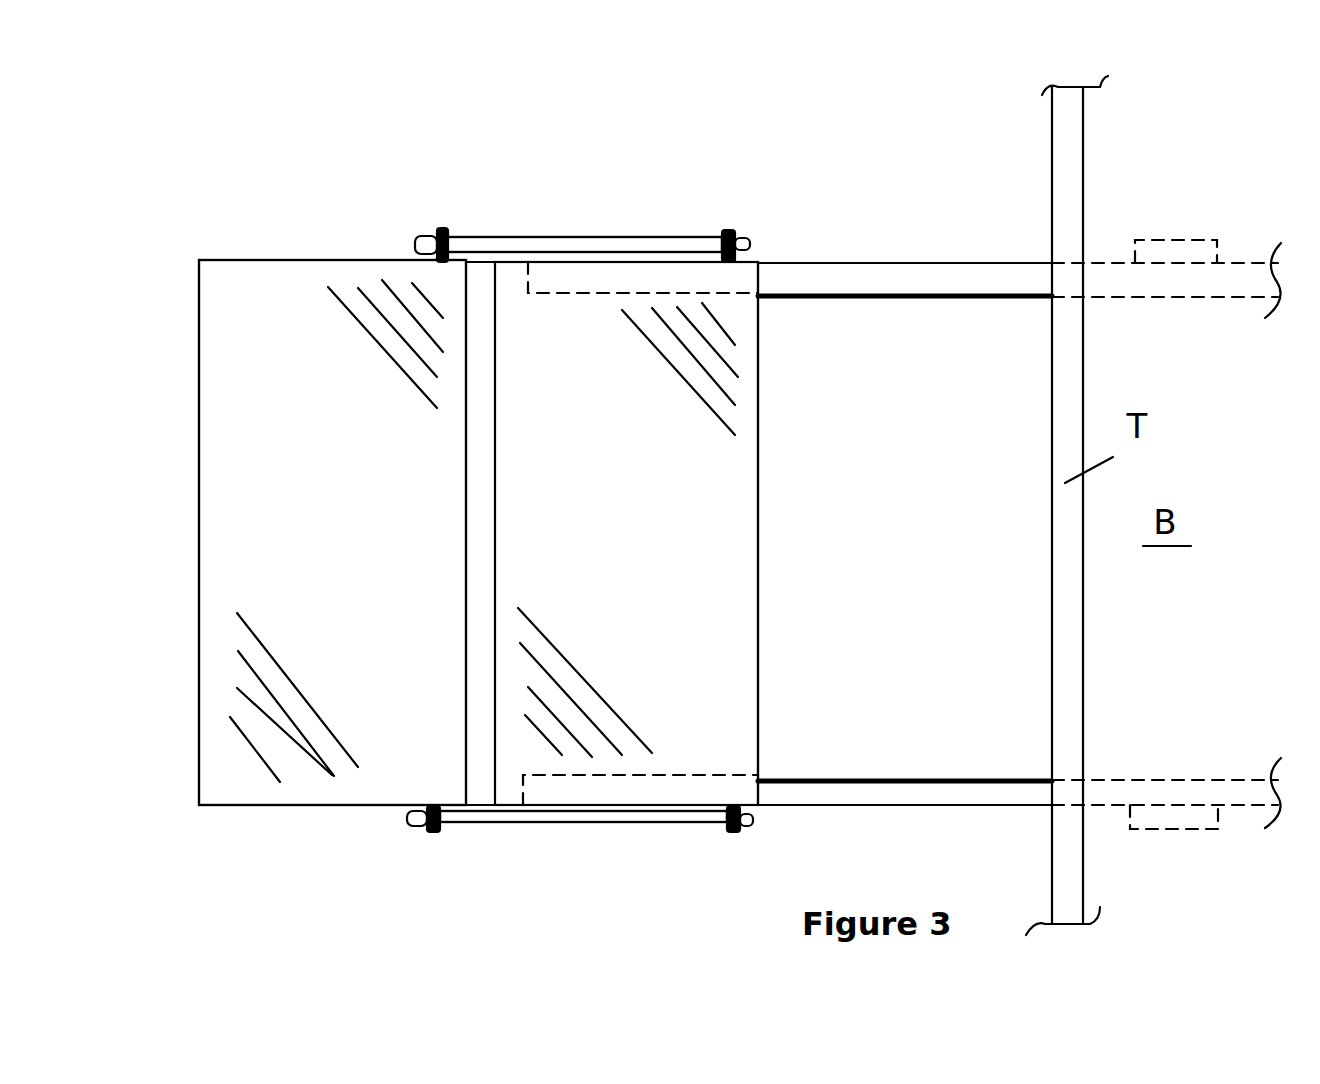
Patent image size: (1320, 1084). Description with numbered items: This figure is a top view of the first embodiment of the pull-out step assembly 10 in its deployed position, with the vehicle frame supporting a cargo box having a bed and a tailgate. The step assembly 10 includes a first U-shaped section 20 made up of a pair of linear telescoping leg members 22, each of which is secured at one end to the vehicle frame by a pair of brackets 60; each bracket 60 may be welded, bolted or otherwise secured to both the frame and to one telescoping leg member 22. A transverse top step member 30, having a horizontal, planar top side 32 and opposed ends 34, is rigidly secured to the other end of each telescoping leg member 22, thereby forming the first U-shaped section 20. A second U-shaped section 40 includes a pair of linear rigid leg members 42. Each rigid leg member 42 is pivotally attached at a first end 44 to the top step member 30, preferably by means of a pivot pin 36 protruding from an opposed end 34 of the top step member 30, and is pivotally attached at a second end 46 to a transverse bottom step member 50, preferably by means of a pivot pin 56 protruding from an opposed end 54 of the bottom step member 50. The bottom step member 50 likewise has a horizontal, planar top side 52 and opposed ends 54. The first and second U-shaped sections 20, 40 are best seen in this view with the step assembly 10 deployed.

The pull-out step assembly 10 is at (308, 156).
The first U-shaped section 20 is at (840, 262).
The telescoping leg members 22 is at (902, 278).
The transverse top step member 30 is at (759, 500).
The top side of top step member 32 is at (578, 528).
The opposed ends of top step member 34 is at (633, 262).
The pivot pin 36 is at (735, 232).
The second U-shaped section 40 is at (538, 235).
The rigid leg members 42 is at (587, 237).
The first end of rigid leg member 44 is at (697, 235).
The second end of rigid leg member 46 is at (460, 236).
The transverse bottom step member 50 is at (197, 513).
The top side of bottom step member 52 is at (300, 548).
The opposed ends of bottom step member 54 is at (260, 260).
The pivot pin 56 is at (440, 233).
The brackets 60 is at (1165, 250).